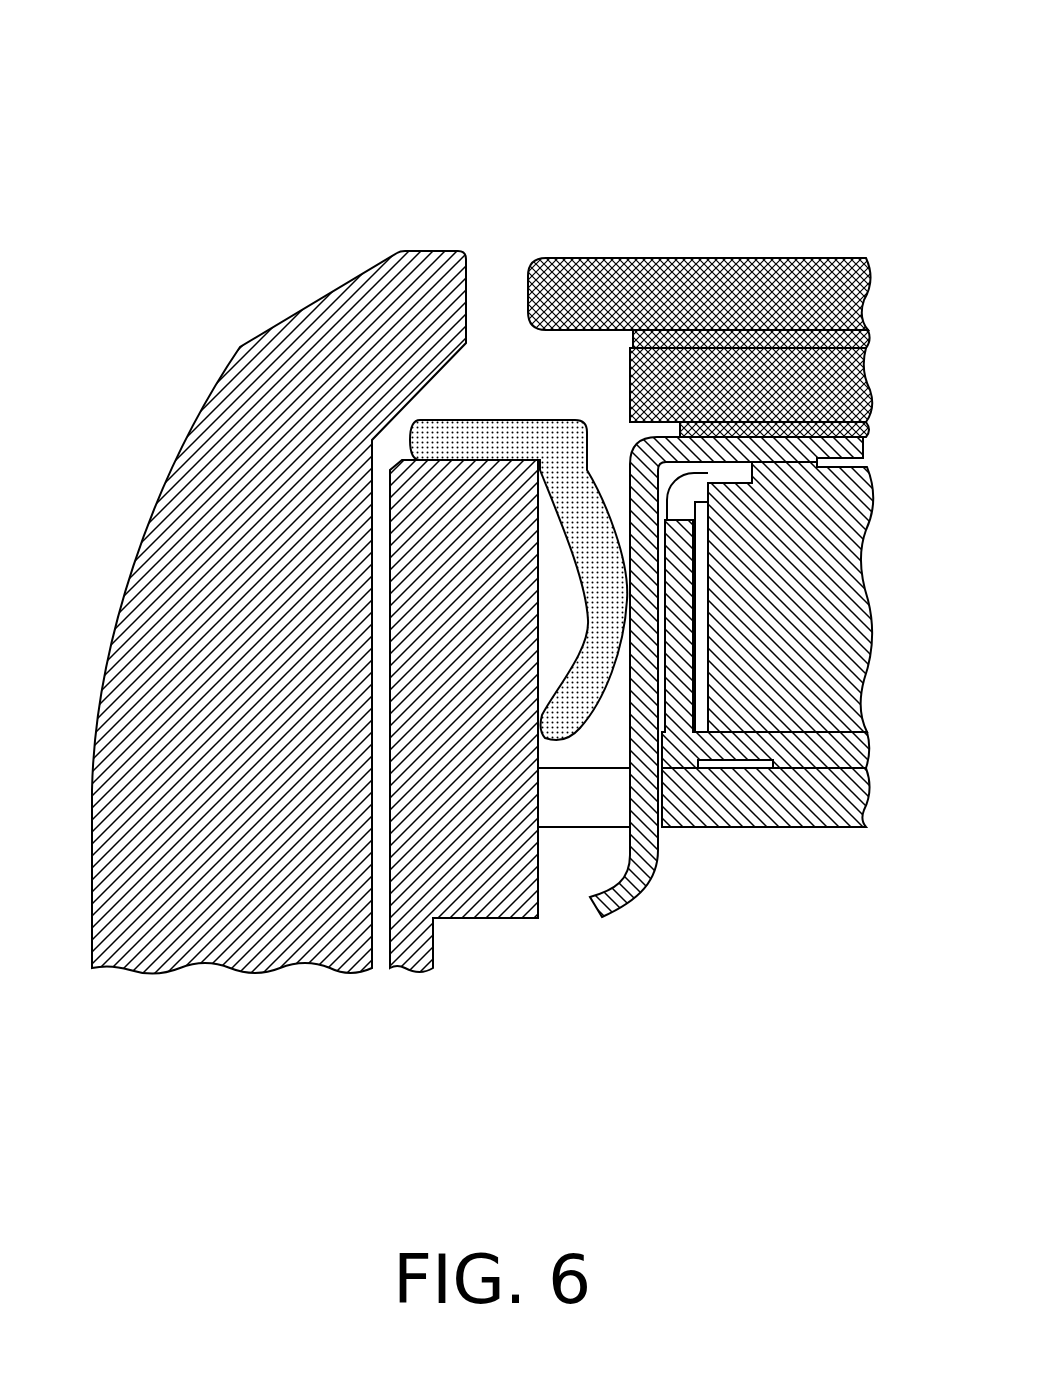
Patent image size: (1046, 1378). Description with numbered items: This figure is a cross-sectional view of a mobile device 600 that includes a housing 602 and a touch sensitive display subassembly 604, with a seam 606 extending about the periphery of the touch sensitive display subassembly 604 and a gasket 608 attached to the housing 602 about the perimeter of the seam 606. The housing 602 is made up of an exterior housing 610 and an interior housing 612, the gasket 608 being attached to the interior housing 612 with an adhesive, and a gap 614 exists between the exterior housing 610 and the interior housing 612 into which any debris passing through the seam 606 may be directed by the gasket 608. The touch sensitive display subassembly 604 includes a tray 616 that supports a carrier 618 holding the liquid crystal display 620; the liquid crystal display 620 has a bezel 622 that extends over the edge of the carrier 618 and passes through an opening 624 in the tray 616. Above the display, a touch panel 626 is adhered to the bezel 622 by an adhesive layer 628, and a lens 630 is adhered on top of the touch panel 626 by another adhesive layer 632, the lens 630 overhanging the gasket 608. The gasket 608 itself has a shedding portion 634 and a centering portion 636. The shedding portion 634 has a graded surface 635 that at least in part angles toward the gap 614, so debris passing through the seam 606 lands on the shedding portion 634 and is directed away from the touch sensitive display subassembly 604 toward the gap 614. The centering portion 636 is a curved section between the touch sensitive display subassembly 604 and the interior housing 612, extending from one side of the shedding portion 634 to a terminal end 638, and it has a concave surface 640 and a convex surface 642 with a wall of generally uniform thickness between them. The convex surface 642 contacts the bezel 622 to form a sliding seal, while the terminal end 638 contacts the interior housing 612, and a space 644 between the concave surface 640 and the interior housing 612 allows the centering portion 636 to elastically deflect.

The mobile device 600 is at (575, 105).
The housing 602 is at (400, 1062).
The touch sensitive display subassembly 604 is at (684, 165).
The seam 606 is at (492, 252).
The gasket 608 is at (532, 398).
The exterior housing 610 is at (272, 370).
The interior housing 612 is at (435, 868).
The gap 614 is at (383, 583).
The tray 616 is at (767, 813).
The carrier 618 is at (850, 748).
The liquid crystal display 620 is at (860, 493).
The bezel 622 is at (640, 680).
The opening 624 is at (595, 816).
The touch panel 626 is at (842, 378).
The adhesive layer 628 is at (866, 433).
The lens 630 is at (795, 285).
The adhesive layer 632 is at (864, 338).
The shedding portion 634 is at (457, 440).
The graded surface 635 is at (519, 420).
The centering portion 636 is at (602, 635).
The terminal end 638 is at (543, 738).
The concave surface 640 is at (568, 522).
The convex surface 642 is at (628, 565).
The space 644 is at (582, 627).